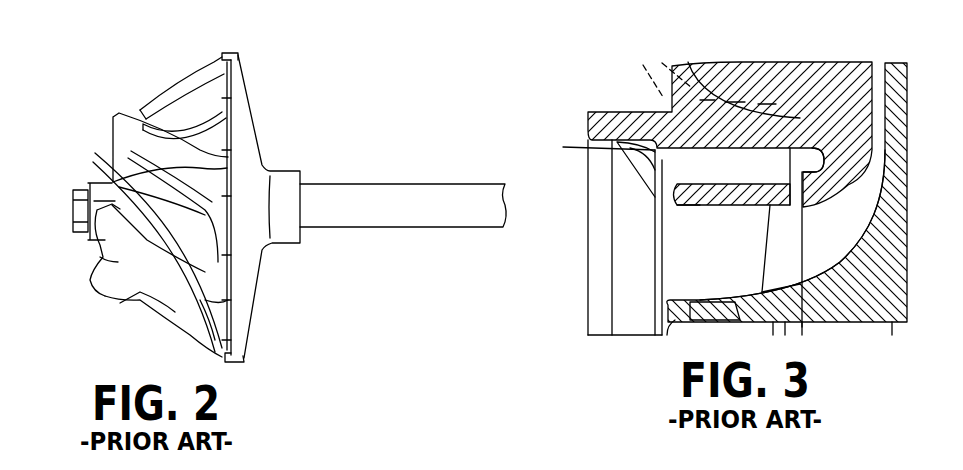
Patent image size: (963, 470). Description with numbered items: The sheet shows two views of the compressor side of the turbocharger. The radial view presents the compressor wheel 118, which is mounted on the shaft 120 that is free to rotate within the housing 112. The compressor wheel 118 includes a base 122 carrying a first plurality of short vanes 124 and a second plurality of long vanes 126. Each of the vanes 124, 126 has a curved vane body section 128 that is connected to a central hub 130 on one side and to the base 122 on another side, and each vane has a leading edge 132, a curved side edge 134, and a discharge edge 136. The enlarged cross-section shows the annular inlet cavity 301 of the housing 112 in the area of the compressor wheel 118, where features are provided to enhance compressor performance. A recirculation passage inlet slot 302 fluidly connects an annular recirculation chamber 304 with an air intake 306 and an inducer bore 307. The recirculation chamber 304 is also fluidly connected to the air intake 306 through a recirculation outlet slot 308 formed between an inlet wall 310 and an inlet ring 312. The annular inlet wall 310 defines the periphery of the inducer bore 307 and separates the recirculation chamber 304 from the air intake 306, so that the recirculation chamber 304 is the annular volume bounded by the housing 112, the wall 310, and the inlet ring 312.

In FIG. 3, the housing 112 is at (657, 120).
In FIG. 2, the compressor wheel 118 is at (128, 199).
In FIG. 2, the shaft 120 is at (398, 194).
In FIG. 2, the base 122 is at (247, 268).
In FIG. 2, the short vanes 124 is at (147, 288).
In FIG. 3, the short vanes 124 is at (812, 270).
In FIG. 2, the long vanes 126 is at (108, 235).
In FIG. 3, the long vanes 126 is at (773, 270).
In FIG. 2, the curved vane body section 128 is at (200, 172).
In FIG. 3, the curved vane body section 128 is at (862, 244).
In FIG. 2, the central hub 130 is at (97, 185).
In FIG. 3, the central hub 130 is at (883, 310).
In FIG. 2, the leading edge 132 is at (112, 132).
In FIG. 2, the curved side edge 134 is at (206, 86).
In FIG. 2, the discharge edge 136 is at (239, 54).
In FIG. 3, the annular inlet cavity 301 is at (684, 156).
In FIG. 3, the recirculation passage inlet slot 302 is at (795, 180).
In FIG. 3, the annular recirculation chamber 304 is at (723, 181).
In FIG. 3, the air intake 306 is at (563, 300).
In FIG. 3, the inducer bore 307 is at (755, 207).
In FIG. 3, the recirculation outlet slot 308 is at (668, 205).
In FIG. 3, the inlet wall 310 is at (688, 208).
In FIG. 3, the inlet ring 312 is at (620, 185).